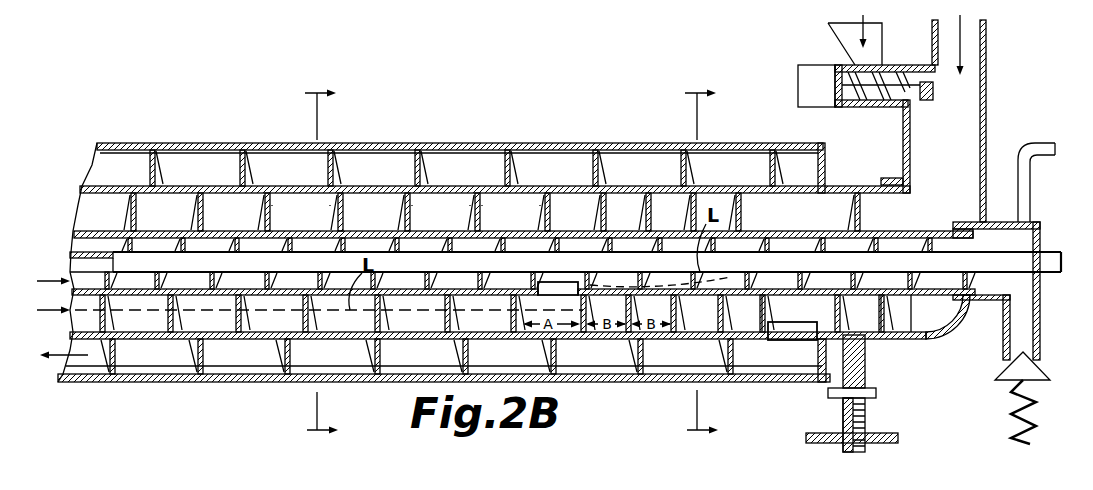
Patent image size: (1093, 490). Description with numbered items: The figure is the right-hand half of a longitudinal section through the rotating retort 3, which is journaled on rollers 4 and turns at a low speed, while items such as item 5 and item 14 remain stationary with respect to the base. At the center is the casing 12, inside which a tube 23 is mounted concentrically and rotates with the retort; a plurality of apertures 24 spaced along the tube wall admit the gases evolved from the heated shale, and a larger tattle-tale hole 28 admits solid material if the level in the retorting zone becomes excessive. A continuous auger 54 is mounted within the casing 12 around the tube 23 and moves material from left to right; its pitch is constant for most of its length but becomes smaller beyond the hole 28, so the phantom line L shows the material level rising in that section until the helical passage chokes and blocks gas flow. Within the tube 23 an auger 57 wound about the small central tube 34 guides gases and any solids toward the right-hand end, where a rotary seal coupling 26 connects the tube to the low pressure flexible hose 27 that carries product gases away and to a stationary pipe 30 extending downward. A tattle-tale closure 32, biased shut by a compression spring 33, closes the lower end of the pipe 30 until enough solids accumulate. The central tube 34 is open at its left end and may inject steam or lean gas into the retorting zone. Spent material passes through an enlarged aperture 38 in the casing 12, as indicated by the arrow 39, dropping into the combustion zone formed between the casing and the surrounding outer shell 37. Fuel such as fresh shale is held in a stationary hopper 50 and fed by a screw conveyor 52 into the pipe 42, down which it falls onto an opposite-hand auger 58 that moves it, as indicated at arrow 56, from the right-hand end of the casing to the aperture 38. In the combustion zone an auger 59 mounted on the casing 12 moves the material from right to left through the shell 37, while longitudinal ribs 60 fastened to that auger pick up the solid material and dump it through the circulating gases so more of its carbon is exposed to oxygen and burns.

The retort 3 is at (332, 264).
The rollers 4 is at (865, 376).
The stationary item 5 is at (870, 440).
The casing 12 is at (530, 182).
The stationary item 14 is at (206, 24).
The tube 23 is at (521, 231).
The apertures 24 is at (318, 231).
The rotary seal coupling 26 is at (968, 220).
The low pressure flexible hose 27 is at (1031, 188).
The tattle-tale hole 28 is at (560, 282).
The stationary pipe 30 is at (1041, 311).
The tattle-tale closure 32 is at (1035, 372).
The compression spring 33 is at (1038, 416).
The central tube 34 is at (1050, 268).
The outer shell 37 is at (440, 147).
The aperture 38 is at (762, 350).
The arrow 39 is at (753, 315).
The pipe 42 is at (985, 72).
The hopper 50 is at (842, 40).
The screw conveyor 52 is at (903, 66).
The auger 54 is at (343, 213).
The arrow 56 is at (866, 313).
The auger 57 is at (286, 190).
The auger 58 is at (883, 313).
The auger 59 is at (336, 182).
The ribs 60 is at (403, 153).